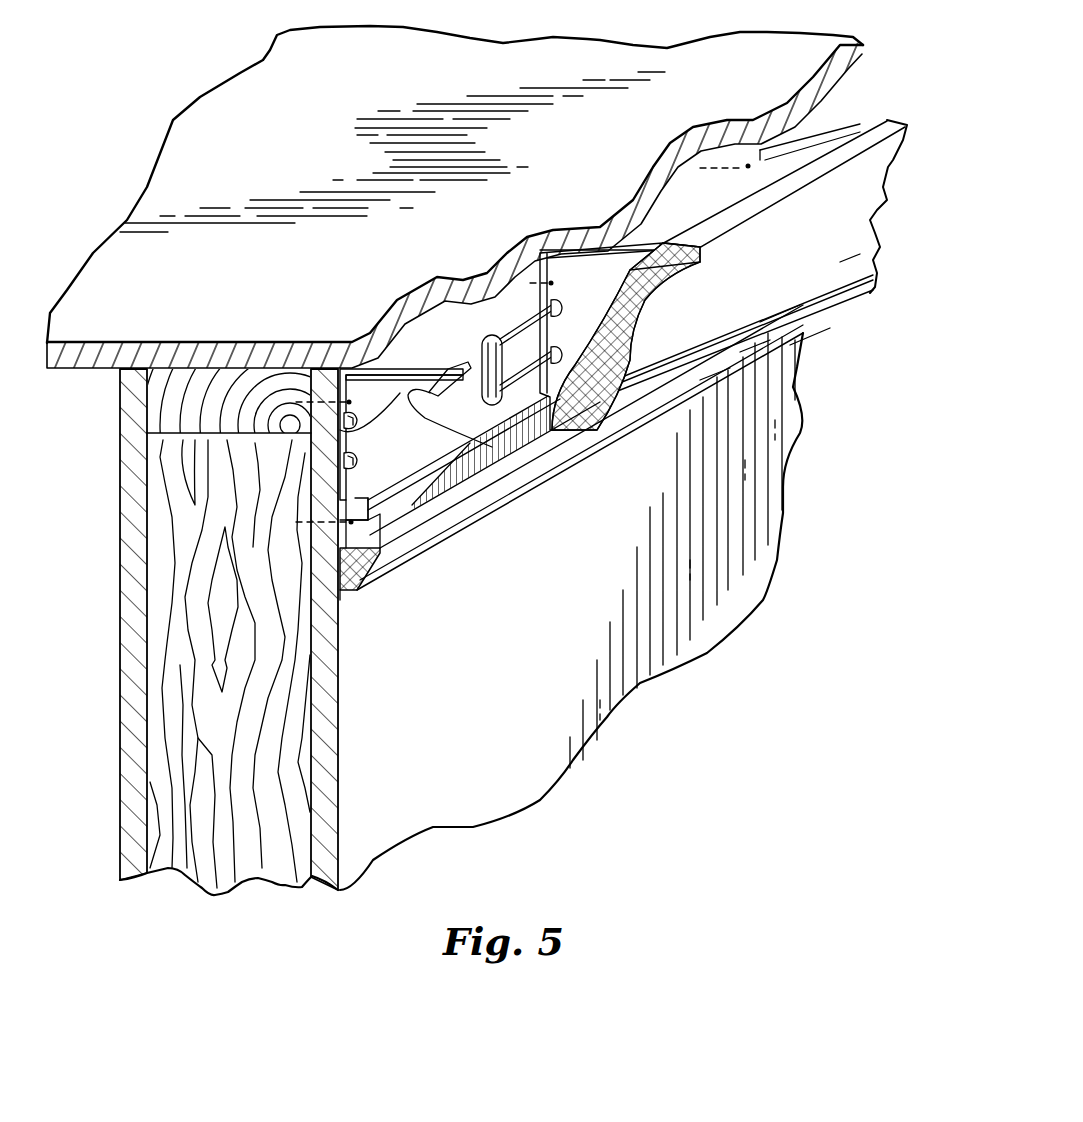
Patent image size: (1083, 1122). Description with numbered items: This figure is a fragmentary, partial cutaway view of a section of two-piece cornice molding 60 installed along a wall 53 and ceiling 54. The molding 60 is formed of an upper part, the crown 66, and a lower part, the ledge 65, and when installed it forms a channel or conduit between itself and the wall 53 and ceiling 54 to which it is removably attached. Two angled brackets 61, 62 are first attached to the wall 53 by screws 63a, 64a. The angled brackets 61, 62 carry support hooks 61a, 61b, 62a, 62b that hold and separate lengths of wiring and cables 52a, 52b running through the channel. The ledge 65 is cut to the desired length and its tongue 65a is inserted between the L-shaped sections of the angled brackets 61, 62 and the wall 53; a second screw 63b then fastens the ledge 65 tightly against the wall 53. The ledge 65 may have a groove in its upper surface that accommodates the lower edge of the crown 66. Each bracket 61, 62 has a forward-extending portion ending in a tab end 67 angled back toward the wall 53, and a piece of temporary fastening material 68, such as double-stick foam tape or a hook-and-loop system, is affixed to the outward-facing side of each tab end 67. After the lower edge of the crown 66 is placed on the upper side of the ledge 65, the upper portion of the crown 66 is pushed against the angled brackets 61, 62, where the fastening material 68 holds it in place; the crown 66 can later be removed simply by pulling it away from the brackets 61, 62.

The wiring and cables 52a is at (407, 312).
The wiring and cables 52b is at (562, 440).
The wall 53 is at (478, 714).
The ceiling 54 is at (87, 372).
The cornice molding 60 is at (907, 98).
The angled bracket 61 is at (370, 336).
The support hook 61a is at (353, 467).
The support hook 61b is at (353, 430).
The angled bracket 62 is at (548, 262).
The support hook 62a is at (545, 293).
The support hook 62b is at (497, 302).
The screw 63a is at (462, 446).
The second screw 63b is at (405, 557).
The screw 64a is at (497, 335).
The ledge 65 is at (372, 587).
The tongue 65a is at (398, 500).
The crown 66 is at (882, 214).
The tab end 67 is at (556, 302).
The temporary fastening material 68 is at (662, 246).